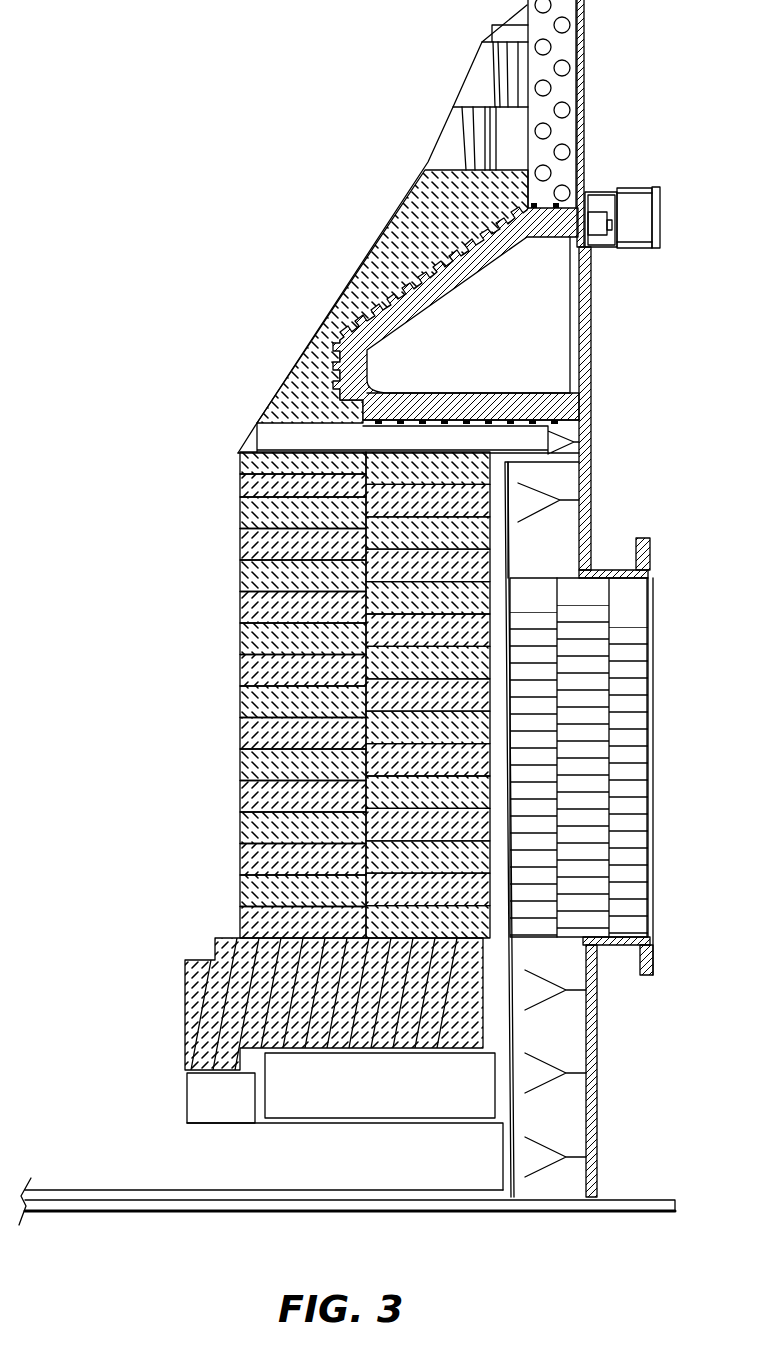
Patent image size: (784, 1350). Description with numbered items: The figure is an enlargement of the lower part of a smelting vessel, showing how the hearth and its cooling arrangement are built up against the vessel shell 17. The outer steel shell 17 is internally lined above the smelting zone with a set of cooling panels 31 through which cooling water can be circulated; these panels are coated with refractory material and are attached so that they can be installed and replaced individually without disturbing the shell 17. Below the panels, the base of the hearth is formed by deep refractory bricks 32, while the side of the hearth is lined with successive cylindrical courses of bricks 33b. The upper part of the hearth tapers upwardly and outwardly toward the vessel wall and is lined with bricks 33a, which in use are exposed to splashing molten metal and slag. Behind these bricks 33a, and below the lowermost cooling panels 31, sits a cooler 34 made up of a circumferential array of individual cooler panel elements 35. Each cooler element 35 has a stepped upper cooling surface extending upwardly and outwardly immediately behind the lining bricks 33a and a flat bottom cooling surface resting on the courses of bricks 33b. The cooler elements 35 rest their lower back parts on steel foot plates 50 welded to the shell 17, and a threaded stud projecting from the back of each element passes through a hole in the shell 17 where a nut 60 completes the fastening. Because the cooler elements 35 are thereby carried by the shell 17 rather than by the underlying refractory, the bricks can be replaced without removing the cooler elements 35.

The vessel shell 17 is at (584, 25).
The cooling panels 31 is at (565, 88).
The deep refractory bricks 32 is at (220, 1005).
The bricks lining the upper part of the hearth 33a is at (422, 208).
The cylindrical courses of bricks 33b is at (253, 612).
The cooler 34 is at (597, 310).
The cooler panel elements 35 is at (398, 286).
The steel foot plates 50 is at (590, 380).
The nuts 60 is at (605, 236).